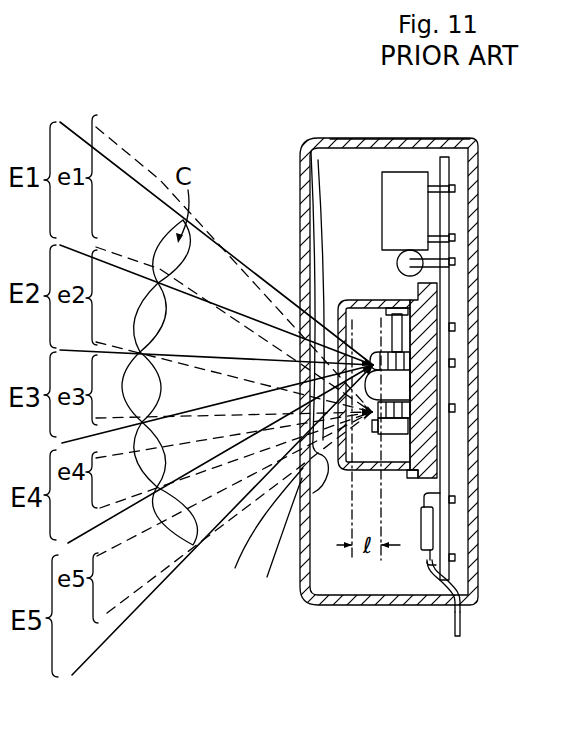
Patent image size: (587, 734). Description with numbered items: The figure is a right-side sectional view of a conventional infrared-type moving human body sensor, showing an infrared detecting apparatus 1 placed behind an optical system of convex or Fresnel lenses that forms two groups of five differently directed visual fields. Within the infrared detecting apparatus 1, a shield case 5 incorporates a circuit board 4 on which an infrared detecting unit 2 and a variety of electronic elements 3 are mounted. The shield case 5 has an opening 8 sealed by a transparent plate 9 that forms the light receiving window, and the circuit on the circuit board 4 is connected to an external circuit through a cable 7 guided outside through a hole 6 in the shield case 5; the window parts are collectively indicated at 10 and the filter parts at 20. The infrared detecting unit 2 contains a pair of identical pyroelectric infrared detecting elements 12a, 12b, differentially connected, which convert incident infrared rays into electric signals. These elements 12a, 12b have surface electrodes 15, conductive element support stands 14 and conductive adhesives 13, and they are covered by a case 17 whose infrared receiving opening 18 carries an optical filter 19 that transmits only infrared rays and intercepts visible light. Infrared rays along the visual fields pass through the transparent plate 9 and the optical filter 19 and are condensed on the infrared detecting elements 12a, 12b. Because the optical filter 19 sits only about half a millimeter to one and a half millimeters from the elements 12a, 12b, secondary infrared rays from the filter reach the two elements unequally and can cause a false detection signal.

The infrared detecting apparatus 1 is at (414, 136).
The infrared detecting unit 2 is at (362, 294).
The electronic elements 3 is at (388, 183).
The circuit board 4 is at (450, 210).
The shield case 5 is at (375, 140).
The hole 6 is at (478, 596).
The cable 7 is at (463, 623).
The opening 8 is at (265, 537).
The transparent plate 9 is at (279, 542).
The window assembly 10 is at (241, 555).
The infrared detecting element 12a is at (395, 378).
The infrared detecting element 12b is at (402, 445).
The conductive adhesives 13 is at (402, 366).
The conductive element support stands 14 is at (412, 335).
The surface electrodes 15 is at (377, 422).
The case 17 is at (407, 476).
The infrared receiving opening 18 is at (326, 106).
The optical filter 19 is at (301, 160).
The optical window unit 20 is at (275, 282).